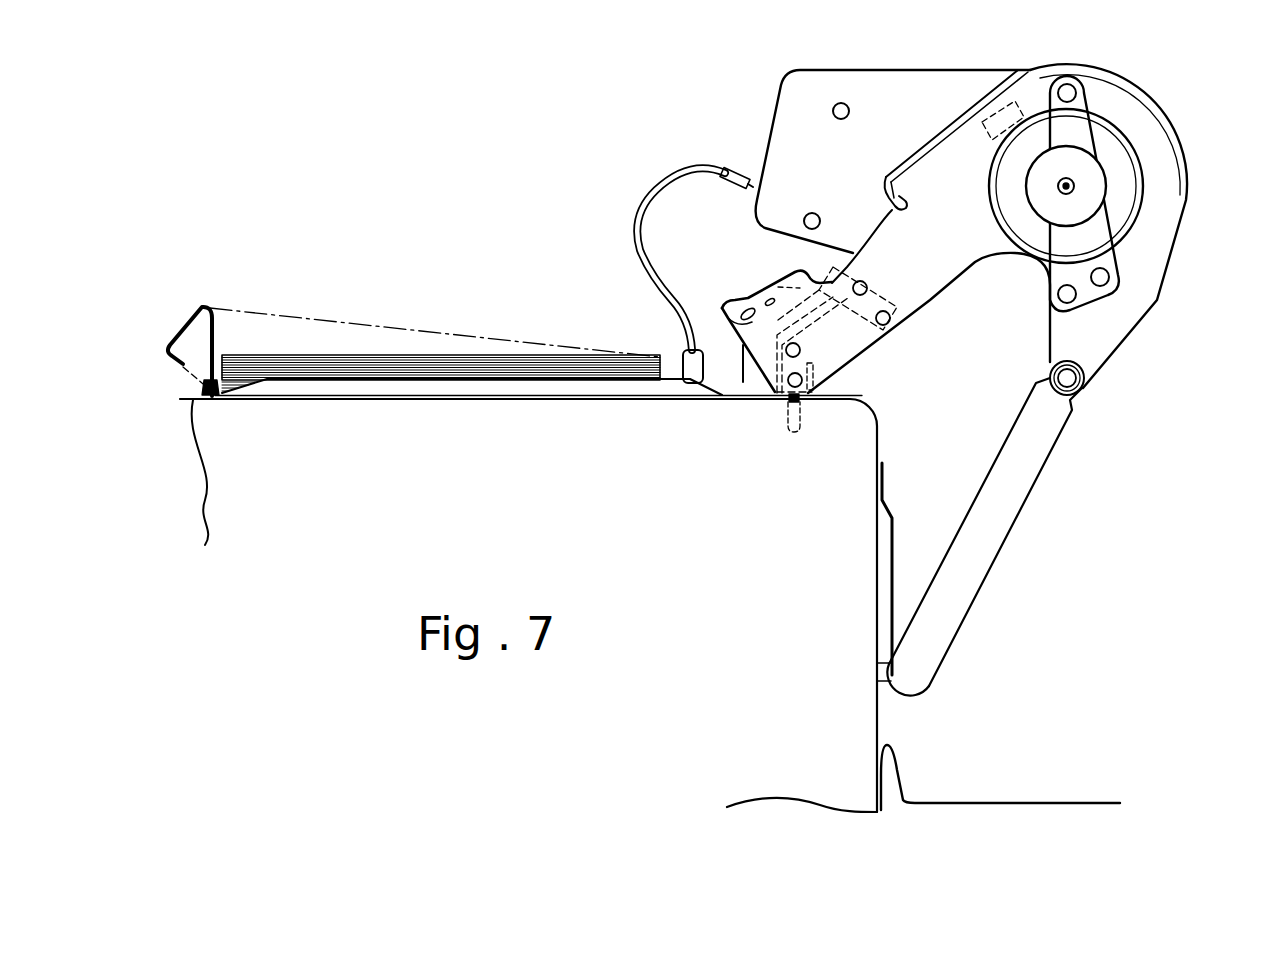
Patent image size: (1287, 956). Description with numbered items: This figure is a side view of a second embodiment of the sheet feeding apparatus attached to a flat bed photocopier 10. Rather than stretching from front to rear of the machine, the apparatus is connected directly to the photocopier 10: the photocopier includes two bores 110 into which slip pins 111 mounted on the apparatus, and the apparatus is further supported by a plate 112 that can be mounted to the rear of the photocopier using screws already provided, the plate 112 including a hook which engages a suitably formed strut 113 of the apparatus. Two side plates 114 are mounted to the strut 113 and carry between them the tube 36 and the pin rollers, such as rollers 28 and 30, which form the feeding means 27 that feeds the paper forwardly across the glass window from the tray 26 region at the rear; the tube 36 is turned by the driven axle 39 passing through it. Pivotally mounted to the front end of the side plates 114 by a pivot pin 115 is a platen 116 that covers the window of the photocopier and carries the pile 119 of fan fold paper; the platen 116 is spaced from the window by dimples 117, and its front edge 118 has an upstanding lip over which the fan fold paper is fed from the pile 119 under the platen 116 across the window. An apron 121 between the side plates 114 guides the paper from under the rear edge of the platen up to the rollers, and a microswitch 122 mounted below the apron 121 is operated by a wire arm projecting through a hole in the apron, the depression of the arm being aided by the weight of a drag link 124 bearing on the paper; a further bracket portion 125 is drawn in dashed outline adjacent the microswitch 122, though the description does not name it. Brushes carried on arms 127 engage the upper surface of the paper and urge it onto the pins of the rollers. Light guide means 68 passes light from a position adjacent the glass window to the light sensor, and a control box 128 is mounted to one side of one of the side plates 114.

The photocopier 10 is at (888, 442).
The tray 26 is at (903, 770).
The feeding means 27 is at (1153, 140).
The roller 28 is at (1122, 194).
The driven axle 39 is at (1141, 235).
The roller 30 is at (1144, 252).
The tube 36 is at (1040, 193).
The light guide means 68 is at (660, 184).
The bores 110 is at (800, 437).
The pins 111 is at (800, 407).
The plate 112 is at (892, 607).
The strut 113 is at (1010, 477).
The side plates 114 is at (930, 257).
The pivot pin 115 is at (744, 312).
The platen 116 is at (330, 386).
The dimples 117 is at (230, 397).
The front edge 118 is at (207, 306).
The pile 119 is at (438, 357).
The apron 121 is at (776, 352).
The microswitch 122 is at (825, 350).
The drag link 124 is at (783, 288).
The bracket tilted portion 125 is at (850, 335).
The arms 127 is at (914, 160).
The control box 128 is at (1020, 100).